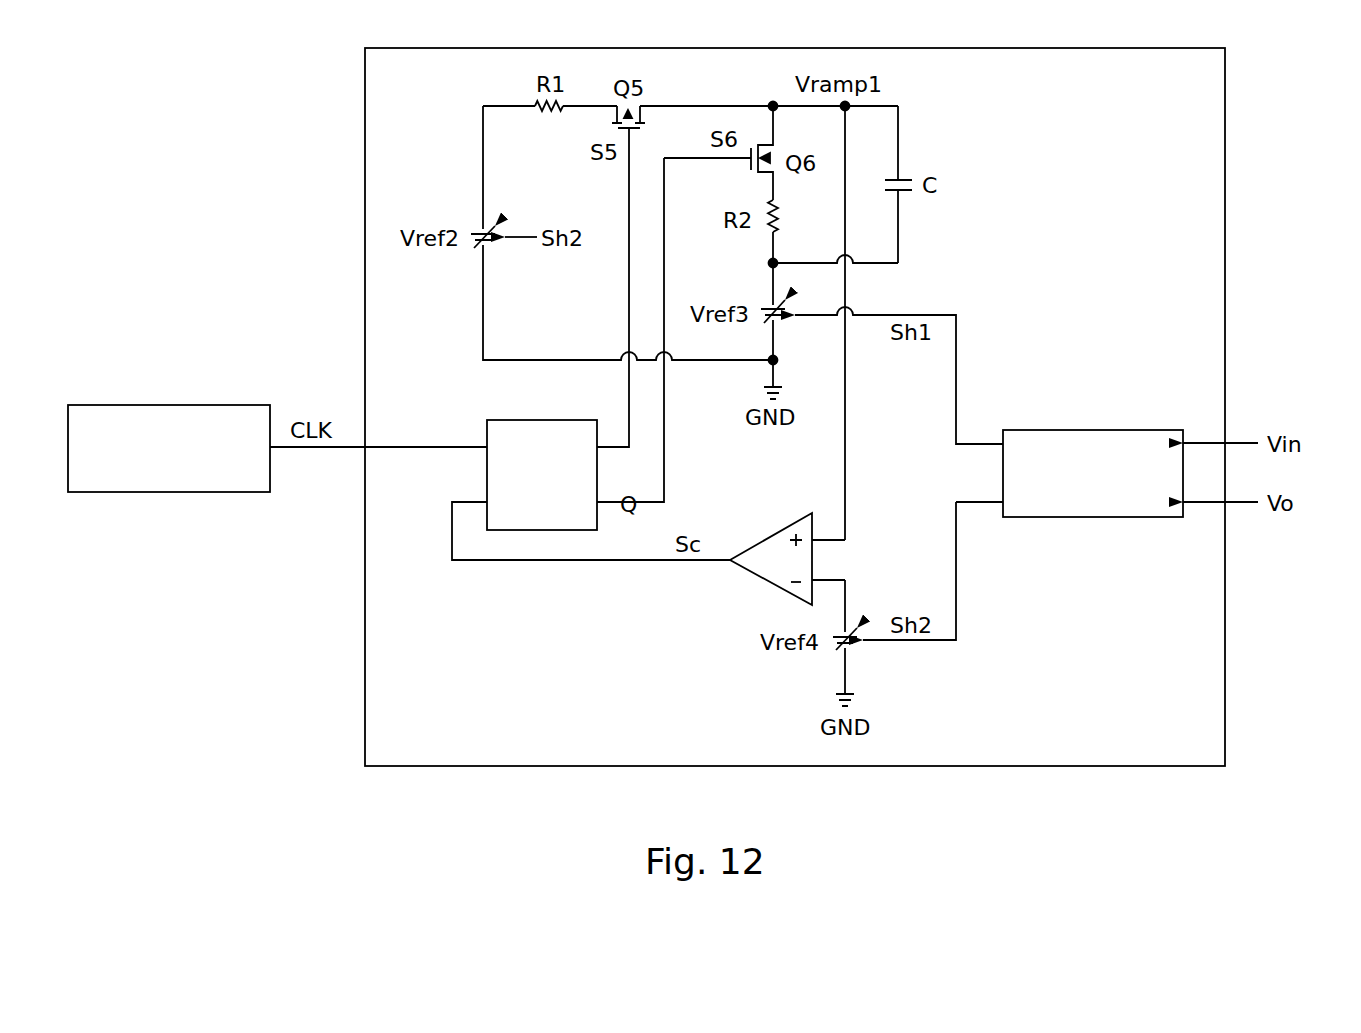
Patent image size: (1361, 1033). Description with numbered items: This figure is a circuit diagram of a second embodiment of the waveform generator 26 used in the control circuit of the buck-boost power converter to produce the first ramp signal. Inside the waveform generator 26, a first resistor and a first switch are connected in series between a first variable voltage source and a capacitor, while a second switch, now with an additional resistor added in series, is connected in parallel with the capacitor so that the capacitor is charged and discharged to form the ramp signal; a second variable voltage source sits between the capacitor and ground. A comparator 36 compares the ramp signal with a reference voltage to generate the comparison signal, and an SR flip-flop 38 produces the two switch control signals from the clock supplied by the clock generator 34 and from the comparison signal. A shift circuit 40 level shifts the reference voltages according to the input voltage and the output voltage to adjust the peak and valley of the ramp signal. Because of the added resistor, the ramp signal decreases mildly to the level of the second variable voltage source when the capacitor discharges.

The waveform generator 26 is at (365, 330).
The clock generator 34 is at (168, 405).
The comparator 36 is at (772, 533).
The SR flip-flop 38 is at (540, 420).
The shift circuit 40 is at (1090, 430).